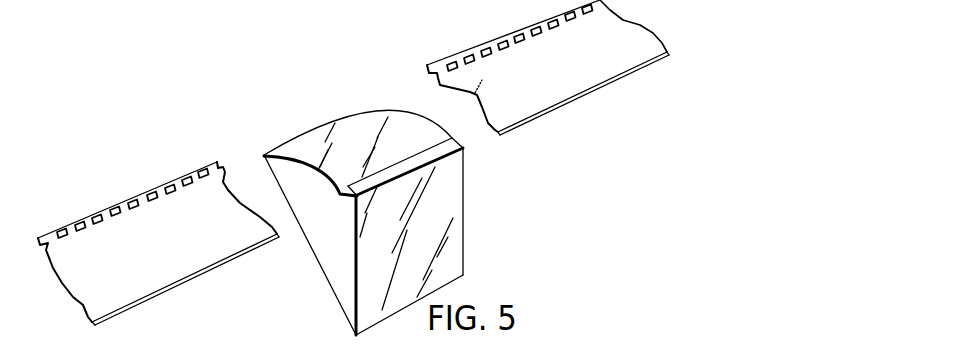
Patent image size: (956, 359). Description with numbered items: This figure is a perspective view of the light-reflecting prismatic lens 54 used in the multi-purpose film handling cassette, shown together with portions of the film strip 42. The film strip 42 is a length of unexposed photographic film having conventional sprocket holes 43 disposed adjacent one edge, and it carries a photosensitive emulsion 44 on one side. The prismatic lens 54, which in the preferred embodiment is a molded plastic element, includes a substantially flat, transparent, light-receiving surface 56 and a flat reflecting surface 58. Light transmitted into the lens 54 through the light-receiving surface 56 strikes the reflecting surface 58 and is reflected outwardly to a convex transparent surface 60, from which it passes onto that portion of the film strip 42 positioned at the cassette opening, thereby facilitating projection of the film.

The film strip 42 is at (205, 210).
The sprocket holes 43 is at (207, 163).
The photosensitive emulsion 44 is at (475, 93).
The prismatic lens 54 is at (470, 176).
The light-receiving surface 56 is at (459, 229).
The reflecting surface 58 is at (305, 244).
The convex transparent surface 60 is at (353, 124).